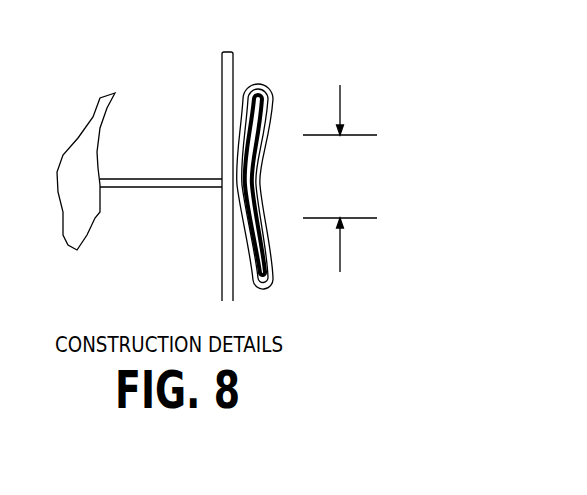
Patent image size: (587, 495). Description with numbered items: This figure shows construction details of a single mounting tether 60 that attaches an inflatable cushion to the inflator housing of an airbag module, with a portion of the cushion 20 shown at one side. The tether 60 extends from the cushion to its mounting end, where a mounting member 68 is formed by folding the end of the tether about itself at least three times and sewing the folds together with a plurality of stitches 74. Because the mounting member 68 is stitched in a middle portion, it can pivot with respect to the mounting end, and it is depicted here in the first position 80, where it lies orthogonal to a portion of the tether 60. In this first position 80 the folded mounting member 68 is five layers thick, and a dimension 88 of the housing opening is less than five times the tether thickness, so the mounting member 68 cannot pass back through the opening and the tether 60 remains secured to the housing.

The body member 20 is at (96, 218).
The mounting tether 60 is at (145, 178).
The mounting member 68 is at (290, 238).
The stitches 74 is at (260, 177).
The first position 80 is at (308, 156).
The dimension of the opening 88 is at (342, 96).